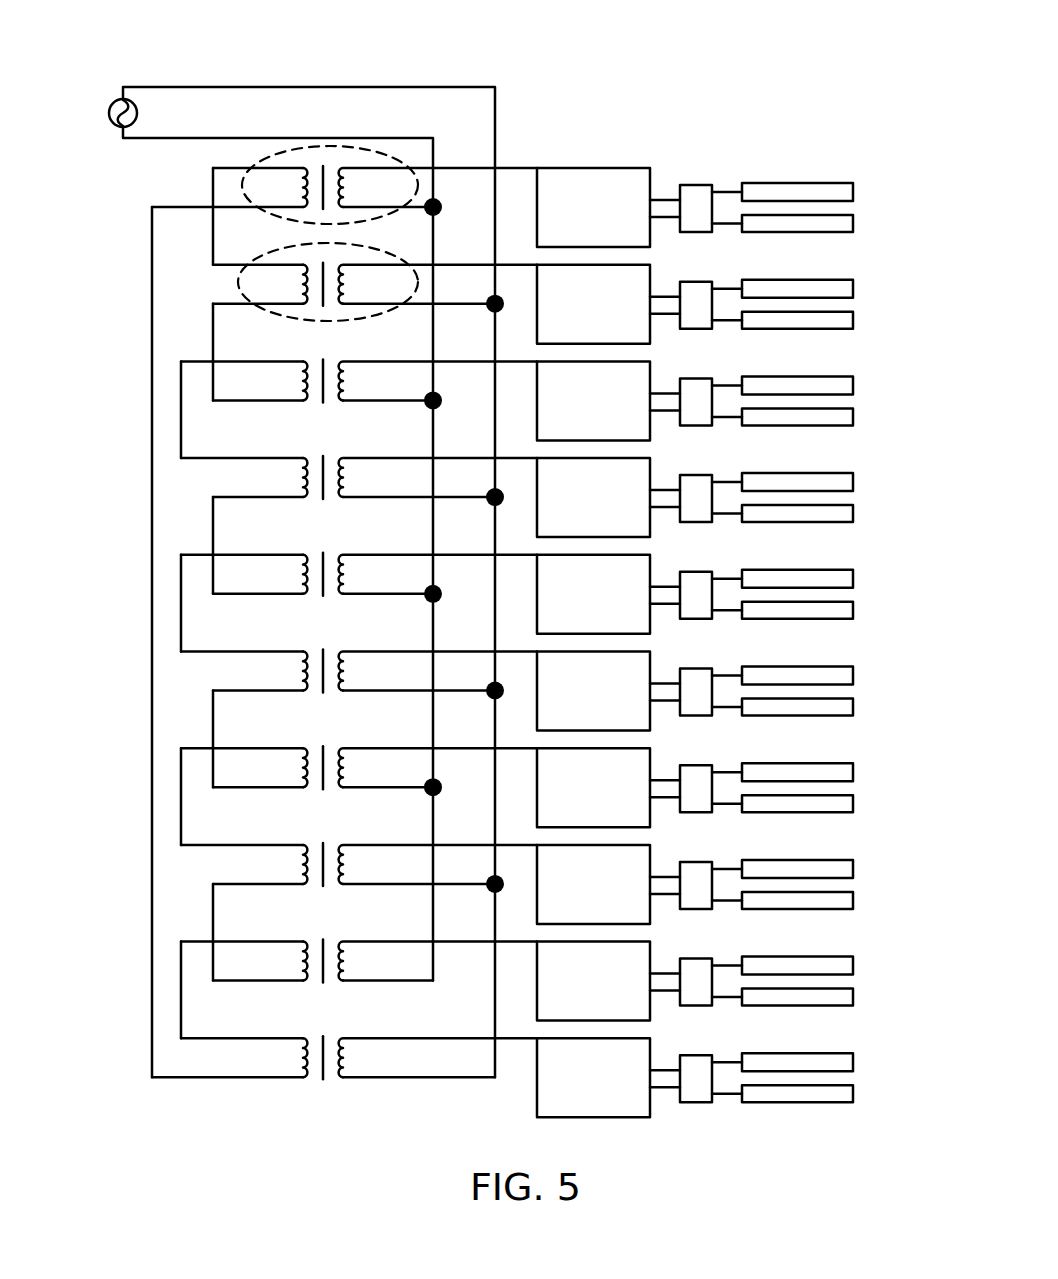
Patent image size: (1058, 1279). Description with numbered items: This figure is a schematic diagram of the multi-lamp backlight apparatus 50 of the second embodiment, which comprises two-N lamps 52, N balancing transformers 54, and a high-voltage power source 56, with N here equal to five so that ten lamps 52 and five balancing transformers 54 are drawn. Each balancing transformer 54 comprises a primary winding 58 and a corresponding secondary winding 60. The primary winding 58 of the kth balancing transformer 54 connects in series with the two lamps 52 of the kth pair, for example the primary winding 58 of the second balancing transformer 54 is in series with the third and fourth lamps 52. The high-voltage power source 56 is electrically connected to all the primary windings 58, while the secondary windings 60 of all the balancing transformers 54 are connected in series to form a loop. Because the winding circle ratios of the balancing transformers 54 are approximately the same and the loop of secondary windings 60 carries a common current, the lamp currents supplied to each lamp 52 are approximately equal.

The multi-lamp backlight apparatus 50 is at (469, 566).
The lamp 52 is at (853, 183).
The balancing transformer 54 is at (351, 210).
The high-voltage power source 56 is at (109, 113).
The primary winding 58 is at (345, 168).
The secondary winding 60 is at (302, 168).